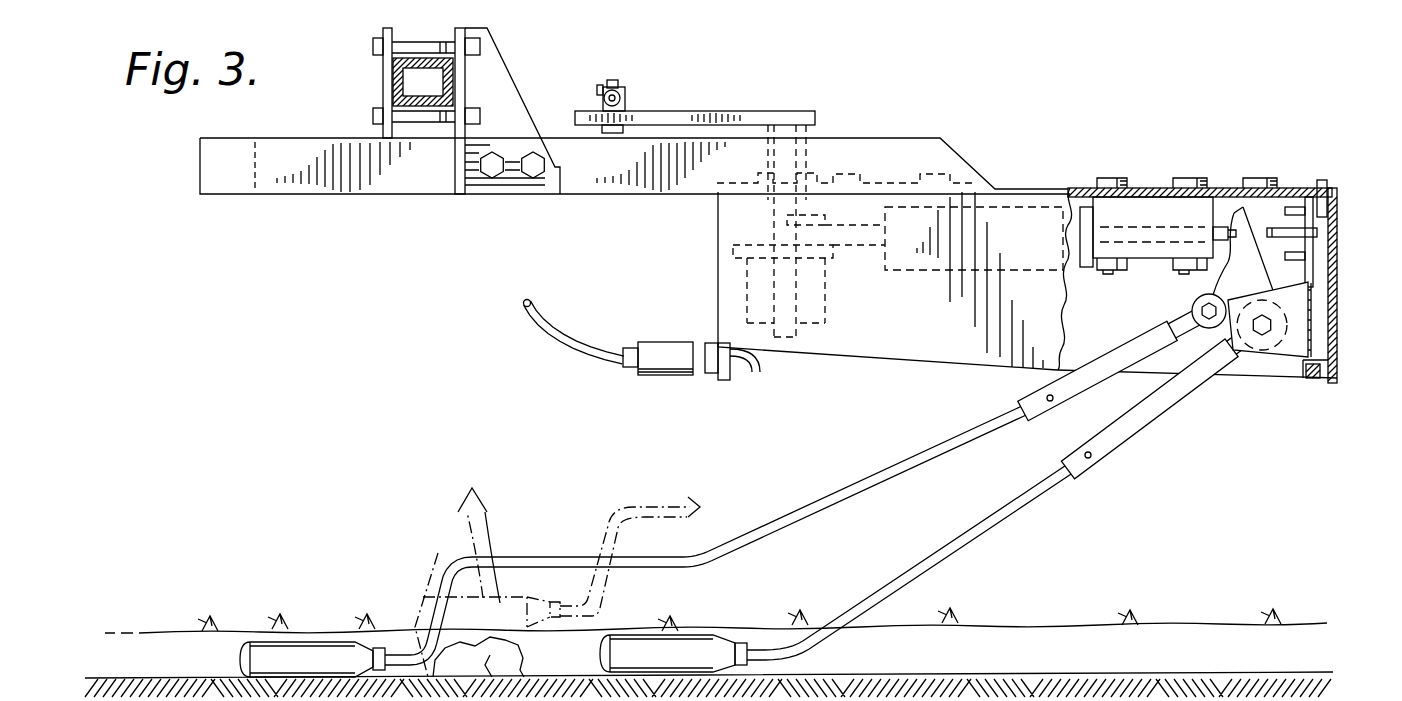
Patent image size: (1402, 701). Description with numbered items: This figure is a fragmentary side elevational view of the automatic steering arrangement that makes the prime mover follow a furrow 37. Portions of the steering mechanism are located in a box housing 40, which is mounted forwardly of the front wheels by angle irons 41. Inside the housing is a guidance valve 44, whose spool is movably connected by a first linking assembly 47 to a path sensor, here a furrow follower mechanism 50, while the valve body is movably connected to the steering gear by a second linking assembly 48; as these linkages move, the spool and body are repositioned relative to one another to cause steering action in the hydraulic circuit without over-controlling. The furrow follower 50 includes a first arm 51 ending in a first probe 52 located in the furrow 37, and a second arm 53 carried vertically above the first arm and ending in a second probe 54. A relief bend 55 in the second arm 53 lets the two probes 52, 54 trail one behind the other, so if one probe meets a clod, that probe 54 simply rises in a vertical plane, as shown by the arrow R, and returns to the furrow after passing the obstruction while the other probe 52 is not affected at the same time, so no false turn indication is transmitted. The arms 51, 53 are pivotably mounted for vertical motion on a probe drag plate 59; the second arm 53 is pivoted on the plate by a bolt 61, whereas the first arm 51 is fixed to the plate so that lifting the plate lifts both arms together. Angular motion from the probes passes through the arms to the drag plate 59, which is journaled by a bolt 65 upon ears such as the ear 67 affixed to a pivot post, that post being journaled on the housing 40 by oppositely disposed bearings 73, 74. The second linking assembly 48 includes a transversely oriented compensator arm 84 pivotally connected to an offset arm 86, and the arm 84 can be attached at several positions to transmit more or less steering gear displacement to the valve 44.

The furrow 37 is at (1233, 642).
The box housing 40 is at (868, 311).
The angle irons 41 is at (907, 157).
The guidance valve 44 is at (1013, 215).
The first linking assembly 47 is at (1256, 218).
The second linking assembly 48 is at (695, 75).
The furrow follower mechanism 50 is at (1165, 417).
The first arm 51 is at (1043, 490).
The first probe 52 is at (692, 650).
The second arm 53 is at (897, 467).
The second probe 54 is at (298, 650).
The relief bend 55 is at (548, 560).
The probe drag plate 59 is at (1222, 278).
The bolt 61 is at (1188, 306).
The bolt 65 is at (1267, 336).
The ear 67 is at (1295, 303).
The bearing 73 is at (1333, 200).
The bearing 74 is at (1318, 377).
The compensator arm 84 is at (625, 97).
The offset arm 86 is at (702, 110).
The arrow R is at (491, 536).